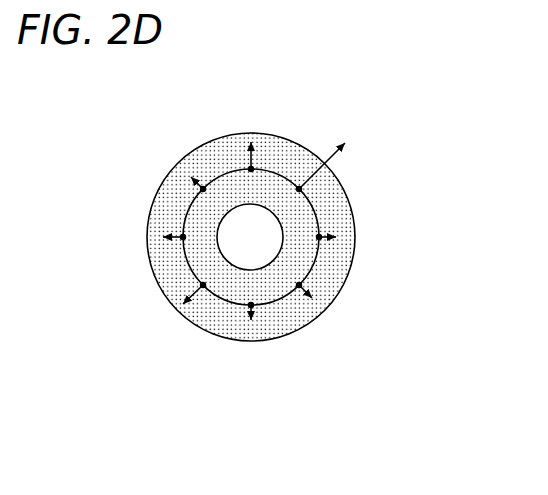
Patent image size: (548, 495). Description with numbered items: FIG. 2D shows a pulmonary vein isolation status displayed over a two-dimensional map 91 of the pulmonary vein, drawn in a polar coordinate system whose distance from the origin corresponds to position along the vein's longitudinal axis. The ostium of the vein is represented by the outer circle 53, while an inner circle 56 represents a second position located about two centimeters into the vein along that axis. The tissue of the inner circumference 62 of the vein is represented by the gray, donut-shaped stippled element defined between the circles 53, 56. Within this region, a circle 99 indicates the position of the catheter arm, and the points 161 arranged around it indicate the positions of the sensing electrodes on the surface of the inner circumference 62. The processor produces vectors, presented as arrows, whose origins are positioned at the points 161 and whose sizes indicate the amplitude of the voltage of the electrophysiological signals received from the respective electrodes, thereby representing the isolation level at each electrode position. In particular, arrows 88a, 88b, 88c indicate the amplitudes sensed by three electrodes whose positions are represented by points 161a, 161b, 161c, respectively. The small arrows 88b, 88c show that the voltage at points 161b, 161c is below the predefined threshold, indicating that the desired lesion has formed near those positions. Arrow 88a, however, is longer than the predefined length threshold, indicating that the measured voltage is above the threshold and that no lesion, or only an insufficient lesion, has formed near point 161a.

The 2D map 91 is at (263, 225).
The circle 99 is at (217, 166).
The inner circumference 62 is at (262, 161).
The circle 56 is at (219, 220).
The circle 53 is at (185, 323).
The points 161 is at (203, 192).
The point 161a is at (299, 186).
The point 161b is at (299, 288).
The point 161c is at (249, 307).
The arrow 88a is at (340, 160).
The arrow 88b is at (323, 308).
The arrow 88c is at (250, 323).